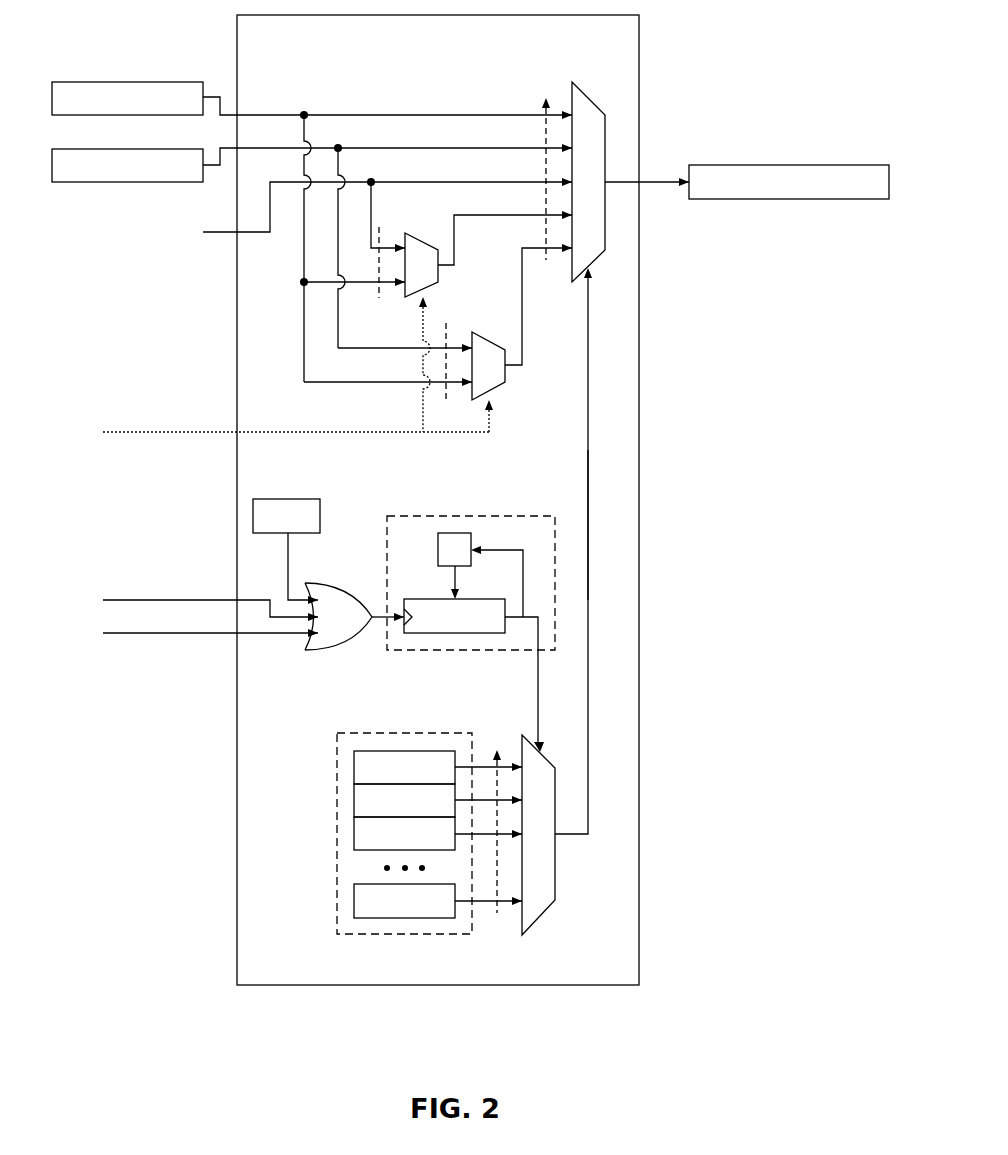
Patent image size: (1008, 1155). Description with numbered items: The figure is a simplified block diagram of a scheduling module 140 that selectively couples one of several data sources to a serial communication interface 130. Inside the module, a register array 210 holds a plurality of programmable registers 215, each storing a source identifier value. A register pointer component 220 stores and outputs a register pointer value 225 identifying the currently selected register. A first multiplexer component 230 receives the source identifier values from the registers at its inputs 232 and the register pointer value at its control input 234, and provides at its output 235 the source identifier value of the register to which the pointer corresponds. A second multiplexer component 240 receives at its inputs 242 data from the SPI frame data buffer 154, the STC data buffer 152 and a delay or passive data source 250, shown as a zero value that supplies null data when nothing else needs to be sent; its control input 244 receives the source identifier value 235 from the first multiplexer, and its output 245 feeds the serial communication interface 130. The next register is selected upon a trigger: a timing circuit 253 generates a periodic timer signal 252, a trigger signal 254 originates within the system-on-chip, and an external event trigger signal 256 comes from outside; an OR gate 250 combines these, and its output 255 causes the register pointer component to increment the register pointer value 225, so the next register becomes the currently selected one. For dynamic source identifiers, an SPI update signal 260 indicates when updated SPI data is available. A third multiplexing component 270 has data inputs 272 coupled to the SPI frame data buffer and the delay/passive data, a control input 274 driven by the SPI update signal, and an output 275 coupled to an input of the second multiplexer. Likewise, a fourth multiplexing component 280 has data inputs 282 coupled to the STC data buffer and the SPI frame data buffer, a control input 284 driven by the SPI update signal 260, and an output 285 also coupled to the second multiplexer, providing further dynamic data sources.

The serial communication interface 130 is at (838, 164).
The scheduling module 140 is at (237, 918).
The STC data buffer 152 is at (70, 182).
The SPI frame data buffer 154 is at (70, 80).
The register array 210 is at (397, 840).
The programmable register 215 is at (354, 800).
The register pointer component 220 is at (418, 516).
The register pointer value 225 is at (440, 599).
The first multiplexer component 230 is at (555, 885).
The inputs of first multiplexer component 232 is at (497, 915).
The control input of first multiplexer component 234 is at (530, 742).
The source identifier value output 235 is at (588, 500).
The second multiplexer component 240 is at (590, 100).
The inputs of second multiplexer component 242 is at (550, 262).
The control input of second multiplexer component 244 is at (590, 275).
The output of second multiplexer component 245 is at (606, 172).
The delay/passive data source 250 is at (220, 235).
The timer signal 252 is at (288, 567).
The timing circuit 253 is at (290, 498).
The trigger signal 254 is at (220, 598).
The output of OR gate 255 is at (388, 610).
The external event trigger signal 256 is at (220, 635).
The SPI update signal 260 is at (130, 436).
The third multiplexing component 270 is at (420, 250).
The data inputs of third multiplexing component 272 is at (380, 242).
The control input of third multiplexing component 274 is at (423, 318).
The output of third multiplexing component 275 is at (454, 248).
The fourth multiplexing component 280 is at (503, 385).
The data inputs of fourth multiplexing component 282 is at (446, 340).
The control input of fourth multiplexing component 284 is at (489, 415).
The output of fourth multiplexing component 285 is at (522, 352).